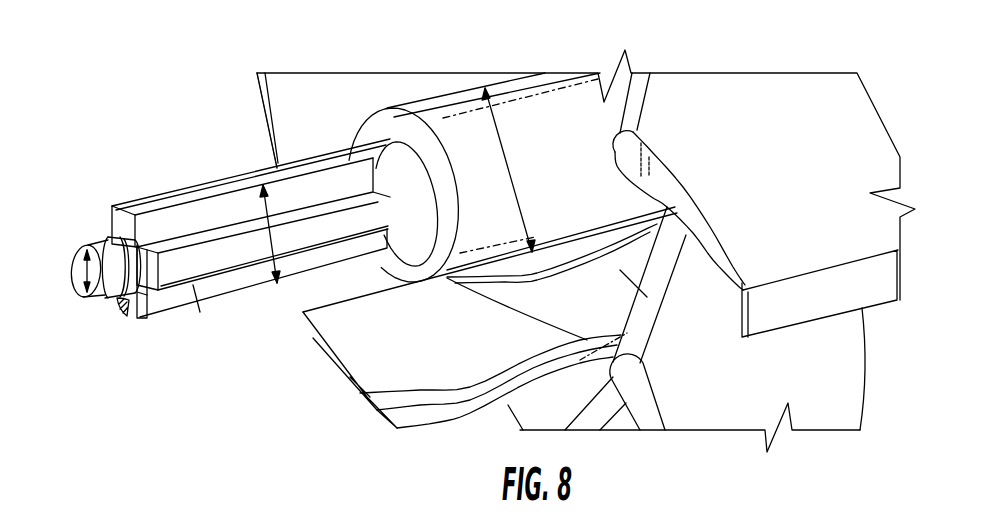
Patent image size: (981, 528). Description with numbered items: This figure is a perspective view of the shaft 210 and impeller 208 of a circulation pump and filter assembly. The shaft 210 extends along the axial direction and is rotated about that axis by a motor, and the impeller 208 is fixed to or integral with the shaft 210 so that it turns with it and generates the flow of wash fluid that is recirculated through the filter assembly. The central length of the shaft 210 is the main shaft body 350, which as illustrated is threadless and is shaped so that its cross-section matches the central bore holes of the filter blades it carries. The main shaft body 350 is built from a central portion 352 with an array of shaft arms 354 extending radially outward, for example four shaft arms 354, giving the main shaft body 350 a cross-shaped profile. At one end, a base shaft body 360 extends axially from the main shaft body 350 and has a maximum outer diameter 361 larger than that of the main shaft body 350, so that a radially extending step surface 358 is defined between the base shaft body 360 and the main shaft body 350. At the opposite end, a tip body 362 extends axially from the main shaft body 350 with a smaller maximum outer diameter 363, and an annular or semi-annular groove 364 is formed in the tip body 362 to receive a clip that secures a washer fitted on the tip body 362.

The impeller 208 is at (743, 87).
The shaft 210 is at (124, 152).
The main shaft body 350 is at (251, 247).
The central portion 352 is at (146, 320).
The shaft arms 354 is at (182, 268).
The step surface 358 is at (433, 264).
The base shaft body 360 is at (555, 92).
The maximum outer diameter 361 is at (518, 183).
The tip body 362 is at (107, 236).
The maximum outer diameter 363 is at (86, 272).
The groove 364 is at (123, 318).